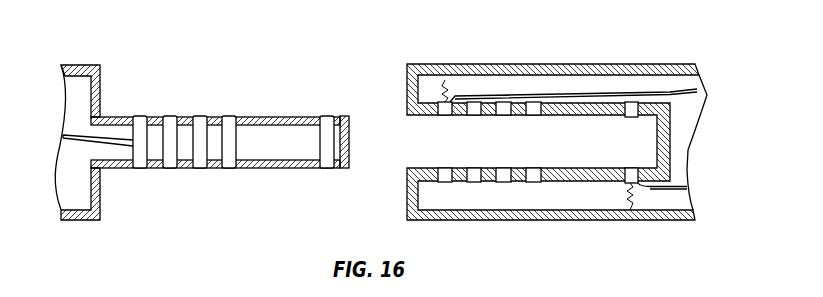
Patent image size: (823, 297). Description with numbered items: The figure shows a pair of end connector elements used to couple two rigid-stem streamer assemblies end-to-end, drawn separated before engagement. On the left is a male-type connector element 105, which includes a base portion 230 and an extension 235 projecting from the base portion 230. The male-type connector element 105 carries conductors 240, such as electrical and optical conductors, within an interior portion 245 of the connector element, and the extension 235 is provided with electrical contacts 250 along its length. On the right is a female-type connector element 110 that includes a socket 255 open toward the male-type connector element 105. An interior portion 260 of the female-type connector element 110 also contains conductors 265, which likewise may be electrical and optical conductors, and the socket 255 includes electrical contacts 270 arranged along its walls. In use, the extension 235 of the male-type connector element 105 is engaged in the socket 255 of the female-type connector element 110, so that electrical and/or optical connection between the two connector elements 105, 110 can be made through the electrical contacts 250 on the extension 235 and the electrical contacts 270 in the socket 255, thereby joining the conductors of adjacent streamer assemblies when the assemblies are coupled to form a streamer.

The male-type connector element 105 is at (195, 67).
The female-type connector element 110 is at (546, 39).
The base portion 230 is at (100, 77).
The extension 235 is at (277, 117).
The conductors 240 is at (103, 144).
The interior portion 245 is at (228, 168).
The electrical contacts 250 is at (328, 168).
The socket 255 is at (573, 117).
The interior portion 260 is at (693, 112).
The conductors 265 is at (697, 86).
The electrical contacts 270 is at (533, 115).